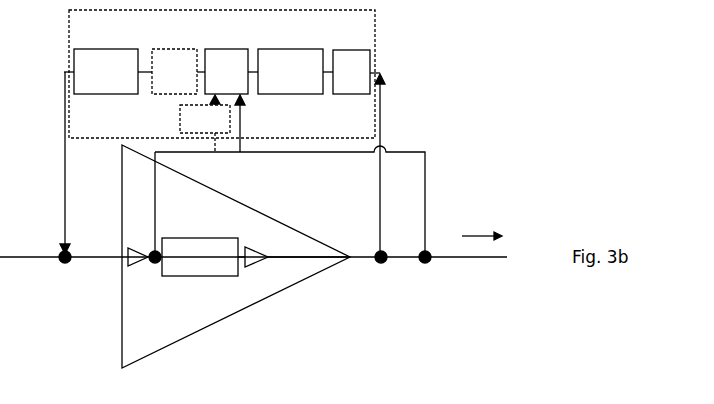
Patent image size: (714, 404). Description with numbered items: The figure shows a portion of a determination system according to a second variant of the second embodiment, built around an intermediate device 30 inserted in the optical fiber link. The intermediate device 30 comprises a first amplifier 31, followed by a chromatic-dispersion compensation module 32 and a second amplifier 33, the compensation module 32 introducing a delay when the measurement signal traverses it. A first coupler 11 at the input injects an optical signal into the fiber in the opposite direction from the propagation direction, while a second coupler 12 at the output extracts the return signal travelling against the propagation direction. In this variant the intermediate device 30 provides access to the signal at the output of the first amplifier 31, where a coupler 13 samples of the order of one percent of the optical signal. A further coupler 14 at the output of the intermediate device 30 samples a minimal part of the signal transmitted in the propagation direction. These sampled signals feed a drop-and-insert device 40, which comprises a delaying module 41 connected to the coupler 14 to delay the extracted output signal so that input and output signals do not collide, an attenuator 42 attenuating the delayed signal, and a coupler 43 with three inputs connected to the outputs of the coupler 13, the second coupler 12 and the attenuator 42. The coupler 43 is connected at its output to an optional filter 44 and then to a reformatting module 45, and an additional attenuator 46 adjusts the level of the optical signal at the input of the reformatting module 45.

The first coupler 11 is at (67, 263).
The second coupler 12 is at (427, 266).
The coupler 13 is at (147, 250).
The coupler 14 is at (381, 266).
The intermediate device 30 is at (228, 318).
The first amplifier 31 is at (144, 266).
The chromatic-dispersion compensation module 32 is at (182, 277).
The second amplifier 33 is at (247, 276).
The drop-and-insert device 40 is at (377, 37).
The delaying module 41 is at (367, 47).
The attenuator 42 is at (310, 47).
The coupler 43 is at (240, 47).
The optional filter 44 is at (188, 47).
The reformatting module 45 is at (132, 47).
The attenuator 46 is at (178, 108).